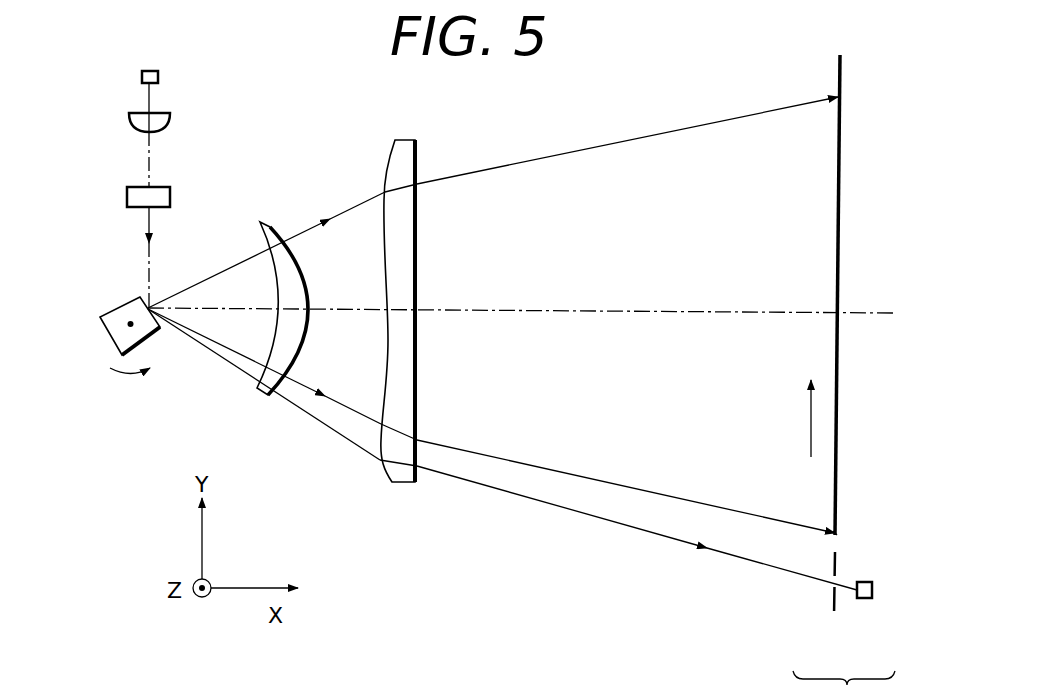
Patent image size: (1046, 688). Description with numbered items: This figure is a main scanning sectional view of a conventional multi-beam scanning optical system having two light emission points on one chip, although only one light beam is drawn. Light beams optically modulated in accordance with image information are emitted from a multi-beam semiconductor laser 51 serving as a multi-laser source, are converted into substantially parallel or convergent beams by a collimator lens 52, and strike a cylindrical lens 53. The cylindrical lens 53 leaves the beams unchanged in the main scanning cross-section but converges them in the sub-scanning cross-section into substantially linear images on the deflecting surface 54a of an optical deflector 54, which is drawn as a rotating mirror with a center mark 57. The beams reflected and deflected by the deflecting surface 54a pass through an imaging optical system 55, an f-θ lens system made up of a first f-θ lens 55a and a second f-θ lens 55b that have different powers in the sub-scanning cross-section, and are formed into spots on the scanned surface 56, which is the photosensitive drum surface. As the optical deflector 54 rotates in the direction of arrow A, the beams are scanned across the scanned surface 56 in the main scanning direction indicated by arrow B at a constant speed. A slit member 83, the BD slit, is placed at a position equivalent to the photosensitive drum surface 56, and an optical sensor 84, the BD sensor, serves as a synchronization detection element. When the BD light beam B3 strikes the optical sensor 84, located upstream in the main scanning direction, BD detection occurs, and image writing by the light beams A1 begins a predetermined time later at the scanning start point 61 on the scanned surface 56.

The multi-beam semiconductor laser 51 is at (160, 77).
The collimator lens 52 is at (172, 118).
The cylindrical lens 53 is at (172, 196).
The optical deflector 54 is at (144, 325).
The deflecting surface 54a is at (161, 329).
The imaging optical system 55 is at (333, 287).
The first f-θ lens 55a is at (266, 224).
The second f-θ lens 55b is at (388, 177).
The scanned surface 56 is at (842, 146).
The rotation axis of mirror 57 is at (129, 325).
The scanning start point 61 is at (838, 535).
The slit member 83 is at (832, 606).
The optical sensor 84 is at (873, 593).
The light beams for image formation A1 is at (673, 498).
The BD light beam B3 is at (620, 525).
The arrow B is at (810, 430).